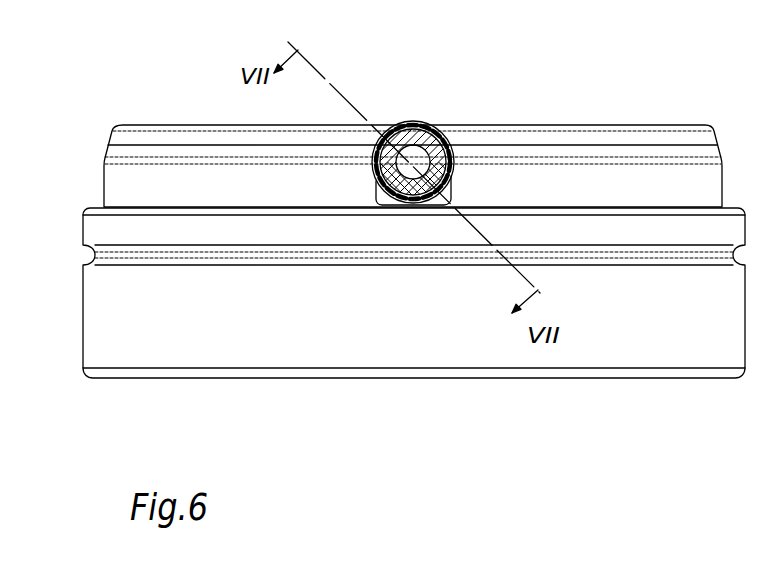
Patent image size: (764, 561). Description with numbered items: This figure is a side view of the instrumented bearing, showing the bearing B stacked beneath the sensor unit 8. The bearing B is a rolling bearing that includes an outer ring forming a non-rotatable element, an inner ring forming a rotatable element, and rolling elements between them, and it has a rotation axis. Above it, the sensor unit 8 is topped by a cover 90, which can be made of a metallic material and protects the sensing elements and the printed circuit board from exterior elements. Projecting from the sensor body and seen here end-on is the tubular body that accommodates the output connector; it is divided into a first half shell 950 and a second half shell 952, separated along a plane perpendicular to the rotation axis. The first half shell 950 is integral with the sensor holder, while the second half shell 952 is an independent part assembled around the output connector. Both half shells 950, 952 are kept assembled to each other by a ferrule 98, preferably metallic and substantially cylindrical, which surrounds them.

The sensor unit 8 is at (67, 120).
The cover 90 is at (616, 137).
The bearing B is at (67, 220).
The ferrule 98 is at (413, 141).
The first half shell 950 is at (377, 177).
The second half shell 952 is at (414, 124).